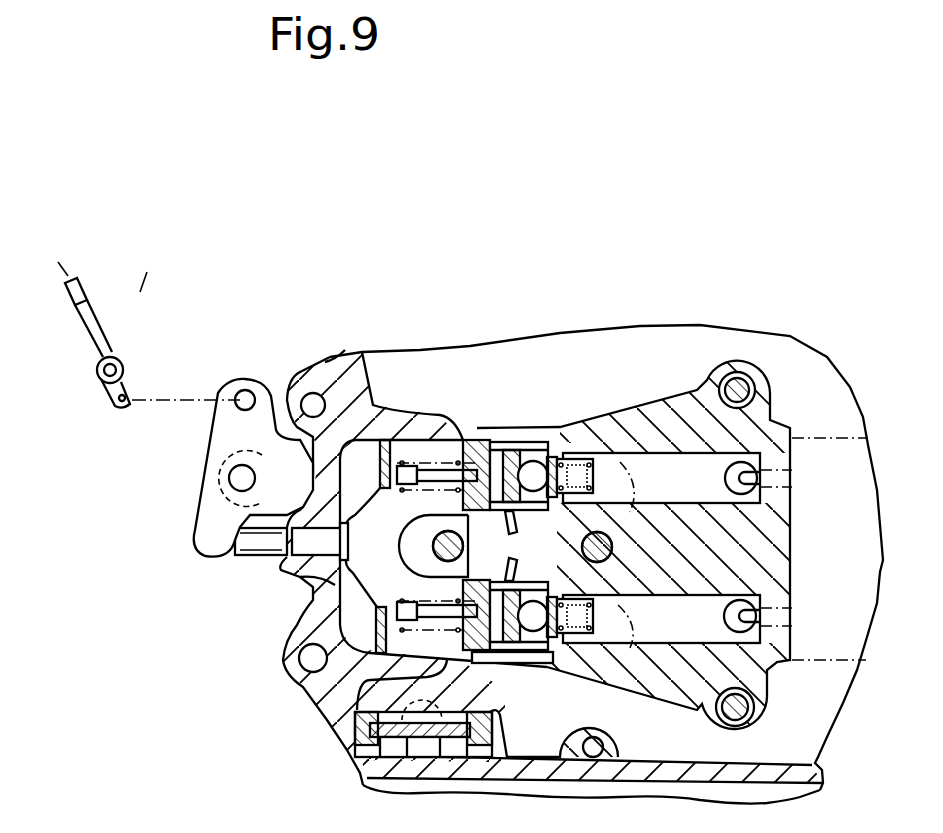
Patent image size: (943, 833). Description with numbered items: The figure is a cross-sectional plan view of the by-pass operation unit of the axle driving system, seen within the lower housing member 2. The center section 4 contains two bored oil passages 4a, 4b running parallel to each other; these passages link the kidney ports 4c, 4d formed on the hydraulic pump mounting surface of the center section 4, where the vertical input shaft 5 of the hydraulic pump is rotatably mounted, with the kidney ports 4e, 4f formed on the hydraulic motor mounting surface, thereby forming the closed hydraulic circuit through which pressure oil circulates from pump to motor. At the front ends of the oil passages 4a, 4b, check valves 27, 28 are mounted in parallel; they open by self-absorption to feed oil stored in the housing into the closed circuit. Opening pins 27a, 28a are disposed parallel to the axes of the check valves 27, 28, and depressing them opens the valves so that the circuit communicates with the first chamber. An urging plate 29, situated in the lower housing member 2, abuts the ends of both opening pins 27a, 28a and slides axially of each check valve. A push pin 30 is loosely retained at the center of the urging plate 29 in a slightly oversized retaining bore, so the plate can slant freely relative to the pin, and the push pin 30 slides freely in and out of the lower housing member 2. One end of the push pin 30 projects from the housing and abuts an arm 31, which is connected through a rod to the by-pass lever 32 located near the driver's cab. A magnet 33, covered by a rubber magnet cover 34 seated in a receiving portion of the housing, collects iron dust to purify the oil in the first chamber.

The lower housing member 2 is at (367, 372).
The center section 4 is at (773, 403).
The oil passage 4a is at (663, 457).
The oil passage 4b is at (670, 640).
The kidney port 4c is at (596, 428).
The kidney port 4d is at (630, 648).
The kidney port 4e is at (790, 480).
The kidney port 4f is at (788, 618).
The input shaft 5 is at (620, 548).
The check valve 27 is at (439, 503).
The opening pin 27a is at (452, 440).
The check valve 28 is at (441, 591).
The opening pin 28a is at (452, 648).
The urging plate 29 is at (313, 612).
The push pin 30 is at (240, 560).
The arm 31 is at (205, 528).
The by-pass lever 32 is at (90, 340).
The magnet 33 is at (370, 747).
The magnet cover 34 is at (353, 737).